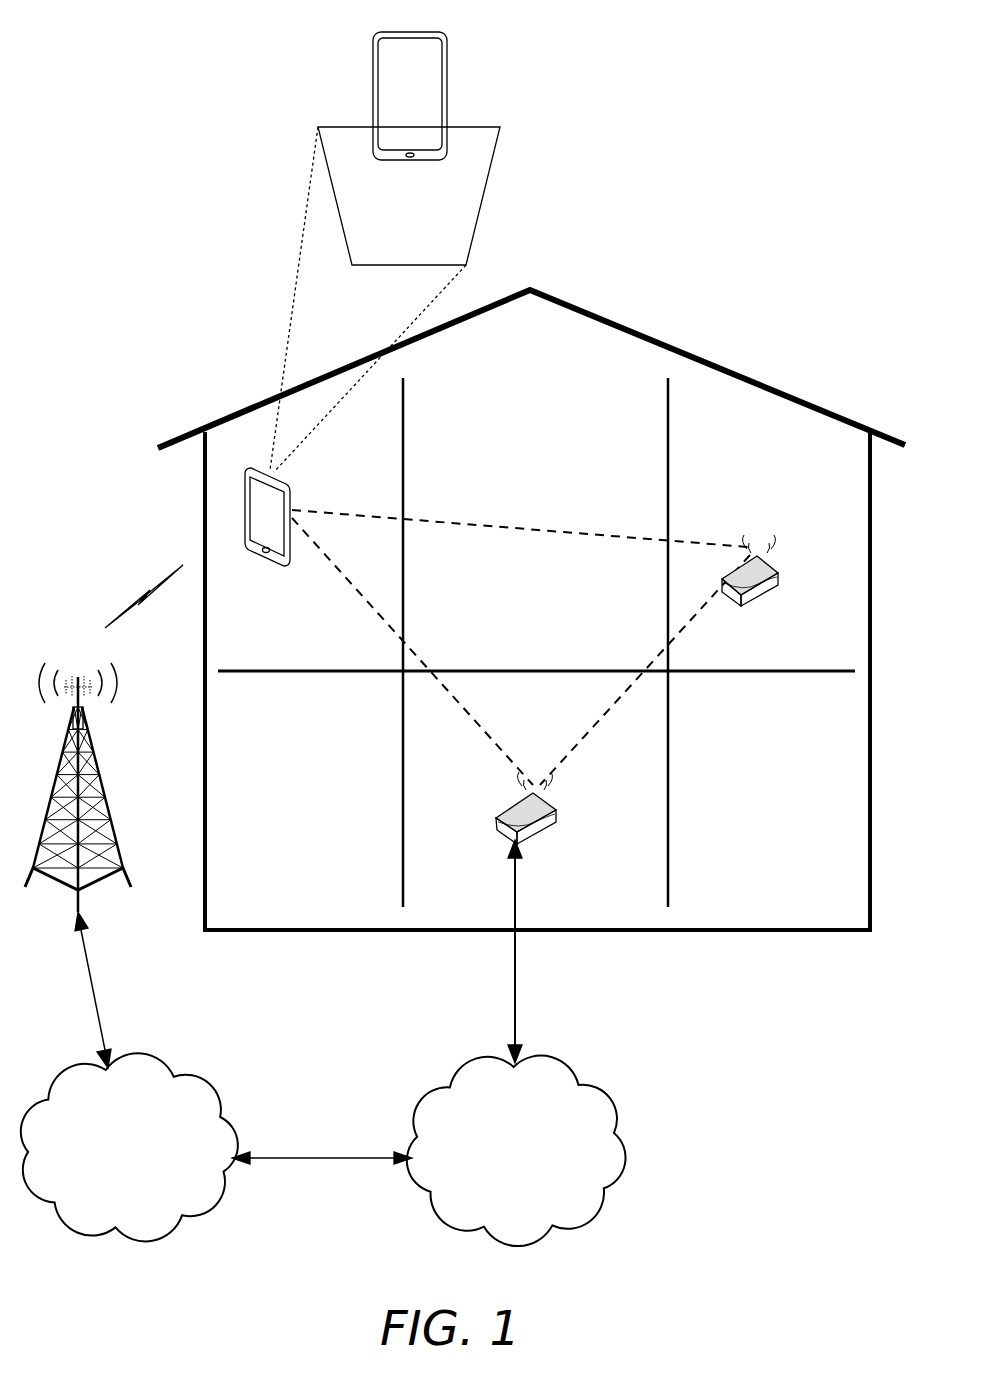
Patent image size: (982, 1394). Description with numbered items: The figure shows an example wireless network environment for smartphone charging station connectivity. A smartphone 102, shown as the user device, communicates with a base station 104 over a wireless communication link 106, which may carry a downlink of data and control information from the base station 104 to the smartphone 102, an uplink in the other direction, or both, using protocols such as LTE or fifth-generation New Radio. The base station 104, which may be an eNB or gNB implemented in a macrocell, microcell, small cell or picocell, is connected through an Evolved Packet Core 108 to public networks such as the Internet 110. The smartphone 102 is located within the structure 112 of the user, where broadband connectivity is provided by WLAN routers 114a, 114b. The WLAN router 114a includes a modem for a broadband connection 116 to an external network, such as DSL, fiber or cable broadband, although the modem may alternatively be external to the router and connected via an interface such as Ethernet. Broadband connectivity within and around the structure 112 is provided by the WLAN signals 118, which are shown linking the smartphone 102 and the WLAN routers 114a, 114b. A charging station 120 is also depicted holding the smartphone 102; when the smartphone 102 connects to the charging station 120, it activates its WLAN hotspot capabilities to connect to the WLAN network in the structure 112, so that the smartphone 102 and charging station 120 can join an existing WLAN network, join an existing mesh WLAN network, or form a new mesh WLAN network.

The smartphone 102 is at (346, 320).
The base station 104 is at (86, 801).
The wireless communication link 106 is at (144, 584).
The Evolved Packet Core 108 is at (129, 1147).
The Internet 110 is at (516, 1151).
The structure 112 is at (252, 405).
The WLAN router 114a is at (539, 821).
The WLAN router 114b is at (765, 582).
The broadband connection 116 is at (508, 1000).
The WLAN signals 118 is at (462, 512).
The charging station 120 is at (385, 299).